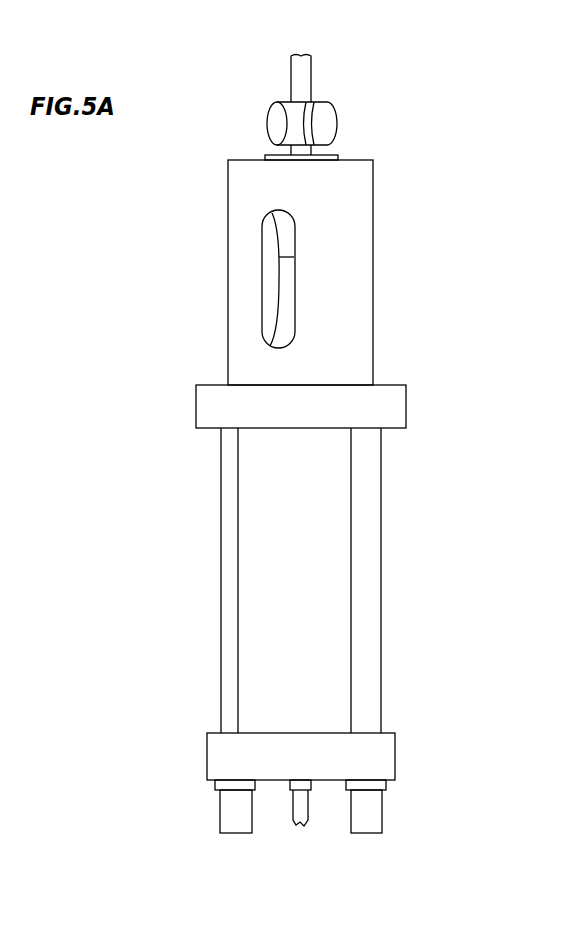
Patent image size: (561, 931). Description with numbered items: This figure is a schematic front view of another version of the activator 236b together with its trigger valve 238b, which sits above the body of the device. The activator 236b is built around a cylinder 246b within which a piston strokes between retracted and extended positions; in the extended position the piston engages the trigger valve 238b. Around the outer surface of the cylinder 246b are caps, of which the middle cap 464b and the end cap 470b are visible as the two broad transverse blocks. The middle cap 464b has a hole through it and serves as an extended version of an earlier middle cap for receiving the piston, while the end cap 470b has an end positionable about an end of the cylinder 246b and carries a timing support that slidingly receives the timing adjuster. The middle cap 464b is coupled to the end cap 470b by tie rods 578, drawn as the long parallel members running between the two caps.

The activator 236b is at (354, 104).
The trigger valve 238b is at (323, 118).
The middle cap 464b is at (408, 412).
The tie rods 578 is at (368, 533).
The cylinder 246b is at (337, 573).
The end cap 470b is at (396, 757).